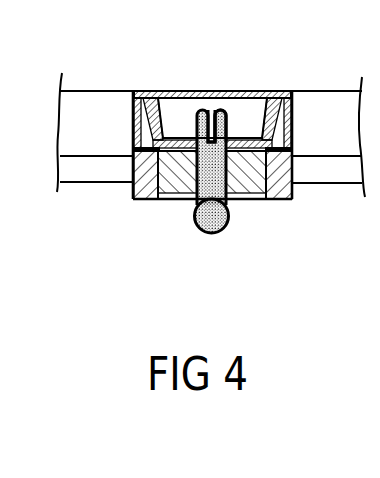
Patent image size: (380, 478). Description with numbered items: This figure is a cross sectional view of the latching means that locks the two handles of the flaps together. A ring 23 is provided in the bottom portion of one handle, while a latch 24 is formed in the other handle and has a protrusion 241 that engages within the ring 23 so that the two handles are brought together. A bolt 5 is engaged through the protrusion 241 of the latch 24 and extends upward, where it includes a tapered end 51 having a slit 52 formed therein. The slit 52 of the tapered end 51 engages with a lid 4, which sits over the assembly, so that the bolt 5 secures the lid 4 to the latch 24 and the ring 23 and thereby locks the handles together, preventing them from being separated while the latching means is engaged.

The latch 24 is at (130, 113).
The lid 4 is at (174, 92).
The slit 52 is at (210, 117).
The tapered end 51 is at (225, 130).
The protrusion 241 is at (177, 184).
The ring 23 is at (277, 190).
The bolt 5 is at (212, 233).